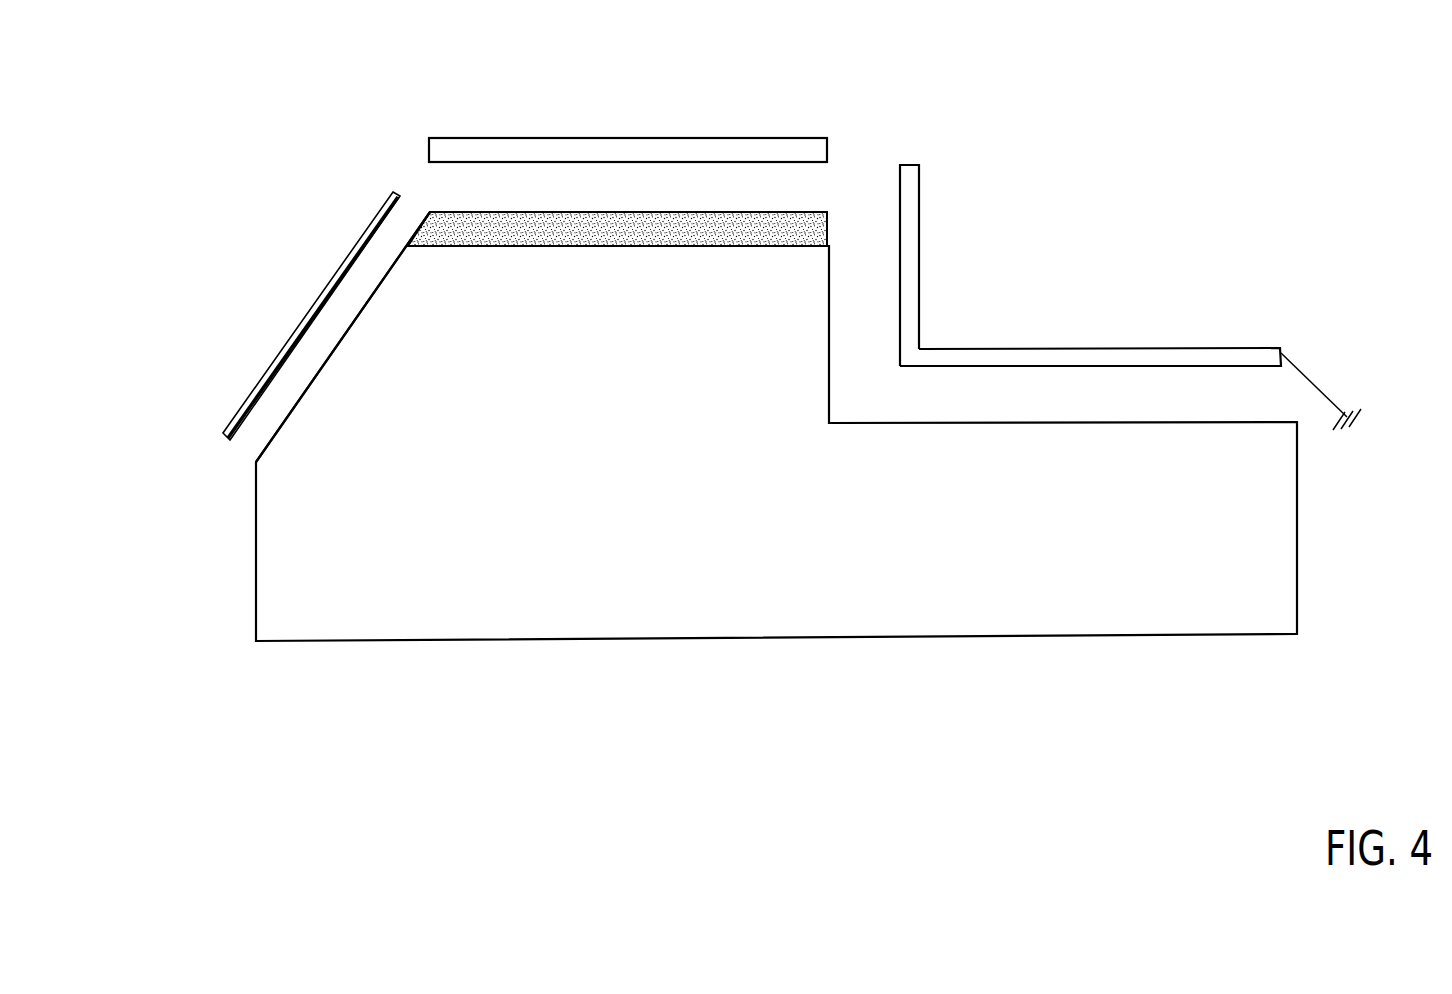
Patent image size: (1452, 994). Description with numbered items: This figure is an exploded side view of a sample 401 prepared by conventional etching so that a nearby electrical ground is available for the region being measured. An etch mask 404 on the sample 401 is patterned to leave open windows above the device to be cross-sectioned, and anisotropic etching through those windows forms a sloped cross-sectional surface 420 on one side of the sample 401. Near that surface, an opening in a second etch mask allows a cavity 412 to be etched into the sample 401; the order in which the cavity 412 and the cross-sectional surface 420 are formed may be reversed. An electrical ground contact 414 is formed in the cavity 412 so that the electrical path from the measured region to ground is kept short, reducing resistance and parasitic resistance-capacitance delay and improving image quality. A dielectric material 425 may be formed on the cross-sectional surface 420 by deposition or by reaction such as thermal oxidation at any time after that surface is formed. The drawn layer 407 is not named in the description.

The sample 401 is at (808, 561).
The etch mask 404 is at (785, 137).
The deposited layer 407 is at (448, 228).
The cavity 412 is at (874, 195).
The electrical ground contact 414 is at (1043, 347).
The cross-sectional surface 420 is at (277, 430).
The dielectric material 425 is at (328, 283).